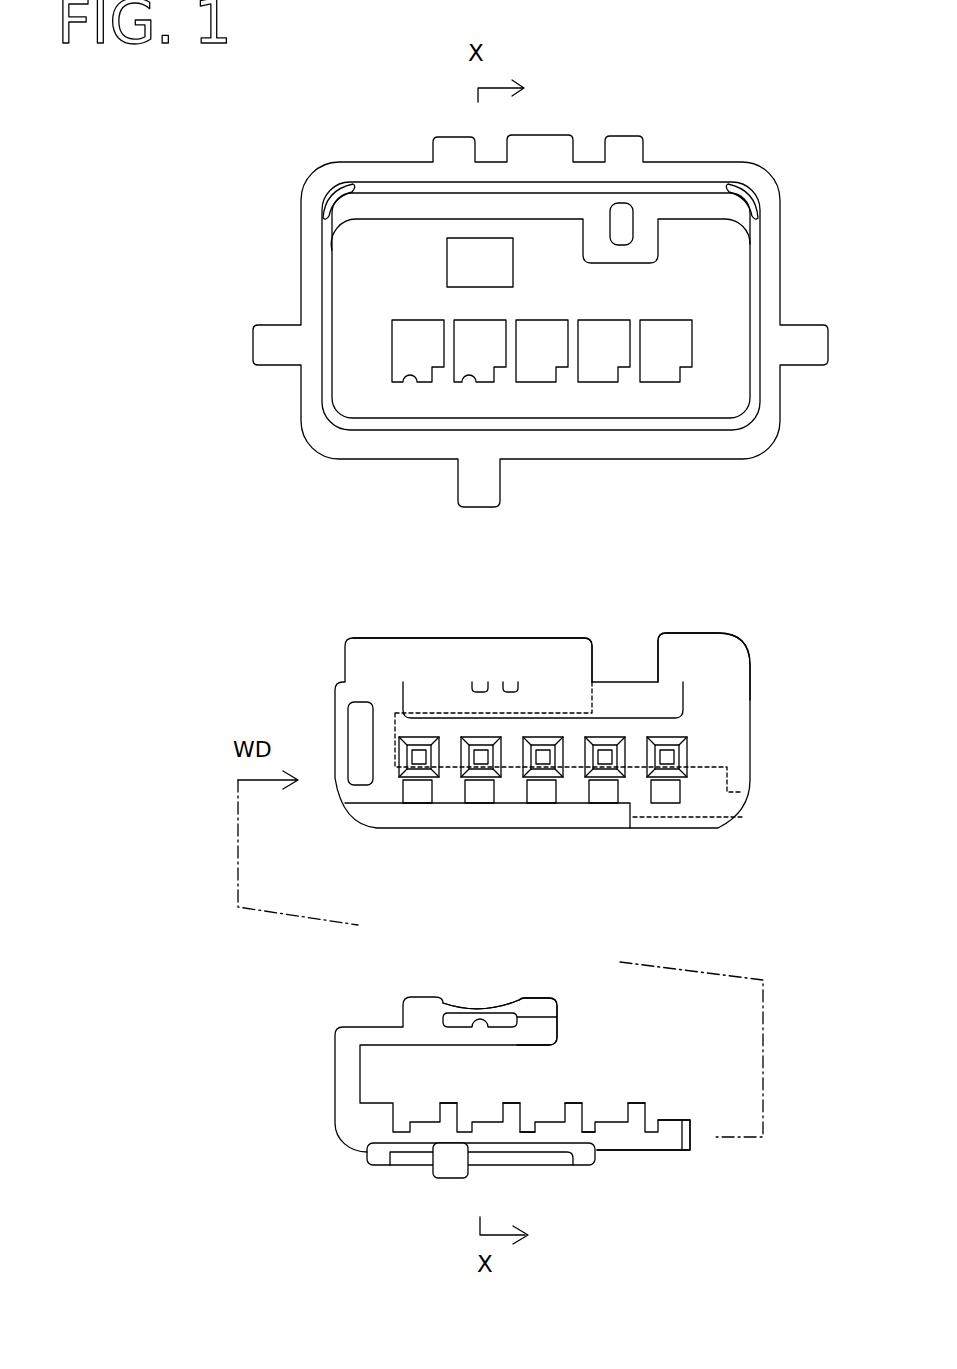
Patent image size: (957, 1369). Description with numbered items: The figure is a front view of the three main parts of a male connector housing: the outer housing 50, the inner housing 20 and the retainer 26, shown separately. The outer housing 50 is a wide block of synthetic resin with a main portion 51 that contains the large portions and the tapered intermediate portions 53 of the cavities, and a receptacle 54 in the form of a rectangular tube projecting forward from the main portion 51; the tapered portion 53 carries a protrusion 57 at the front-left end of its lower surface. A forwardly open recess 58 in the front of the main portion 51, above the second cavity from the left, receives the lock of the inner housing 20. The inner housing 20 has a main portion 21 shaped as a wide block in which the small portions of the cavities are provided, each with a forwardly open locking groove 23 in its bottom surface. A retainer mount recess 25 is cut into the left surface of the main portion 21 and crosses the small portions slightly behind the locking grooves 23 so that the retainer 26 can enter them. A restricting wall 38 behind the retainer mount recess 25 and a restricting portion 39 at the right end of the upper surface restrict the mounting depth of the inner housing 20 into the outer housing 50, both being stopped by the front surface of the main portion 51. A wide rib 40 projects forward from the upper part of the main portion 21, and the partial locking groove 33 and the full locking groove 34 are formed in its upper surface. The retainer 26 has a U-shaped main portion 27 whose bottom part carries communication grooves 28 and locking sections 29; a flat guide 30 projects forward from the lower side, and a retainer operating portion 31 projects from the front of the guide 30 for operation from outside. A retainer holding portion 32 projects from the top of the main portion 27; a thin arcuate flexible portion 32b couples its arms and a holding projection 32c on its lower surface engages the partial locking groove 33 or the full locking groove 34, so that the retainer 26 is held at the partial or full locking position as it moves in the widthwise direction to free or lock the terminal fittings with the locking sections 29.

The inner housing 20 is at (742, 797).
The main portion 21 is at (335, 707).
The locking groove 23 is at (478, 785).
The retainer mount recess 25 is at (570, 767).
The retainer 26 is at (672, 1155).
The main portion 27 is at (335, 1045).
The communication grooves 28 is at (600, 1127).
The locking sections 29 is at (380, 1112).
The guide 30 is at (412, 1163).
The retainer operating portion 31 is at (452, 1170).
The retainer holding portion 32 is at (533, 995).
The flexible portion 32b is at (455, 1005).
The holding projection 32c is at (478, 1018).
The partial locking groove 33 is at (480, 681).
The full locking groove 34 is at (513, 681).
The restricting wall 38 is at (560, 652).
The restricting portion 39 is at (697, 648).
The rib 40 is at (422, 697).
The outer housing 50 is at (722, 447).
The main portion 51 is at (723, 272).
The tapered intermediate portion 53 is at (468, 376).
The receptacle 54 is at (627, 448).
The protrusion 57 is at (558, 372).
The recess 58 is at (447, 238).